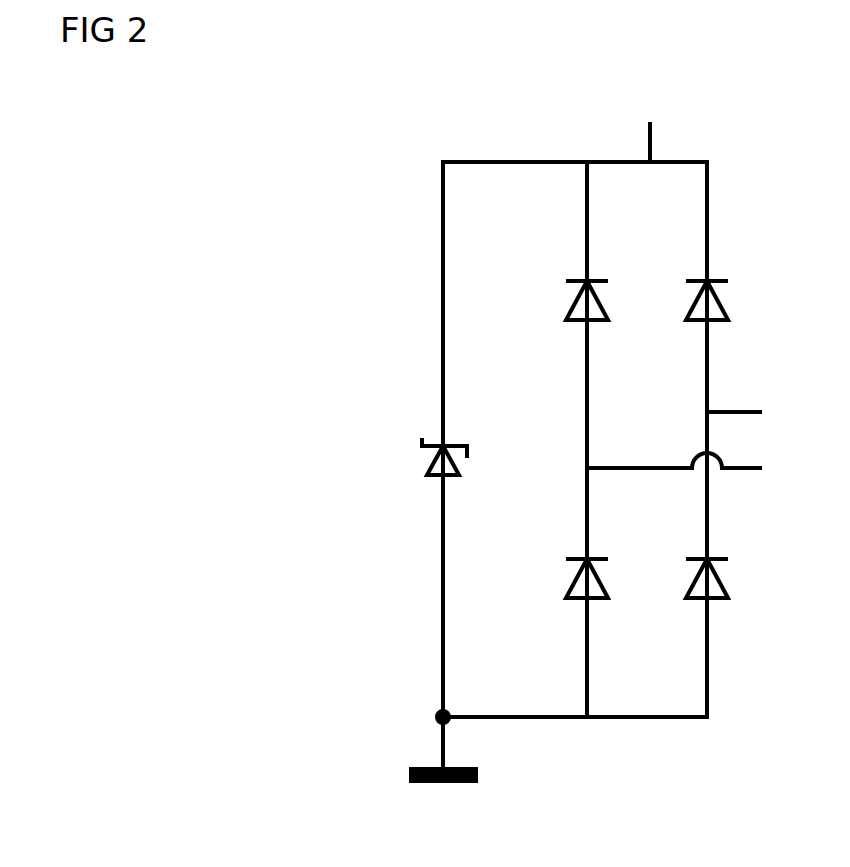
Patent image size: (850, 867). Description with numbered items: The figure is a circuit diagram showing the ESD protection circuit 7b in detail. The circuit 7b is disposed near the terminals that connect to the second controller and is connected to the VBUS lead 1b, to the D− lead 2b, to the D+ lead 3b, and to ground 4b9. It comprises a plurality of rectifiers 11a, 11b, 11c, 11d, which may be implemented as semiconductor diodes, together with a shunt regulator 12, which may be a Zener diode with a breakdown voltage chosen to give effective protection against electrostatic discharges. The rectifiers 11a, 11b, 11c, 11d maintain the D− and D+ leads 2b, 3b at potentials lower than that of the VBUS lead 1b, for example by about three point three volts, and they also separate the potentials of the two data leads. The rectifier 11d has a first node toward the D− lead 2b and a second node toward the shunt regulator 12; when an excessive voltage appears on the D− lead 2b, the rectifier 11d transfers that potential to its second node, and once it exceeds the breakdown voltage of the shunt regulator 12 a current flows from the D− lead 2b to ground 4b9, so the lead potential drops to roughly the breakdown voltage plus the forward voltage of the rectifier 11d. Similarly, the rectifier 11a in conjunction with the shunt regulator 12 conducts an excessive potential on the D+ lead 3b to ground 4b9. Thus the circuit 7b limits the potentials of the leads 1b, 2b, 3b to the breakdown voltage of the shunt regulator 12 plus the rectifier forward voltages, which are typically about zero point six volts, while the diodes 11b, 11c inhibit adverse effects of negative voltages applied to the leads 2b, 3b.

The ESD protection circuit 7b is at (413, 369).
The VBUS lead 1b is at (649, 123).
The D− lead 2b is at (757, 416).
The D+ lead 3b is at (697, 470).
The ground 4b9 is at (443, 769).
The rectifier 11a is at (555, 301).
The rectifier 11b is at (555, 579).
The rectifier 11c is at (677, 579).
The rectifier 11d is at (677, 301).
The shunt regulator 12 is at (413, 458).